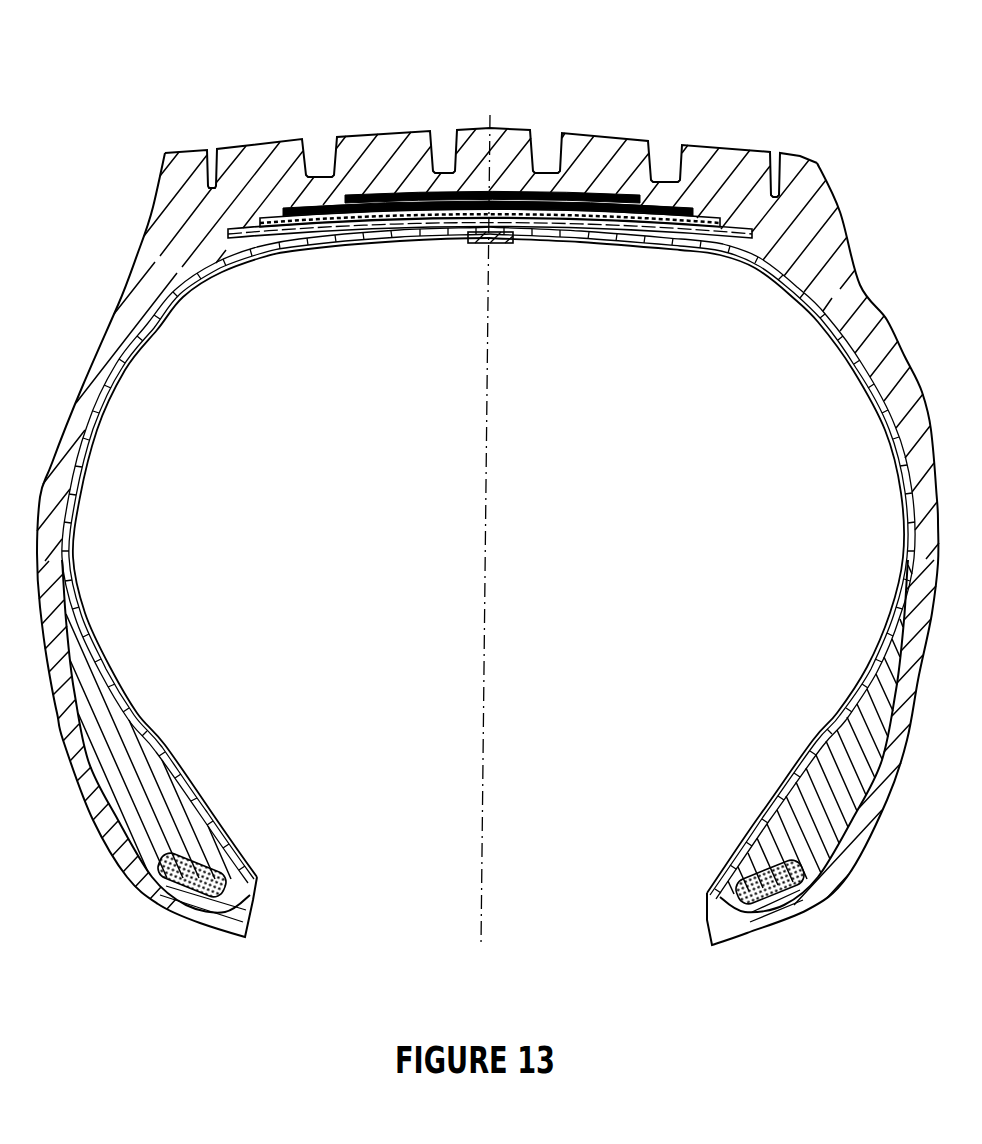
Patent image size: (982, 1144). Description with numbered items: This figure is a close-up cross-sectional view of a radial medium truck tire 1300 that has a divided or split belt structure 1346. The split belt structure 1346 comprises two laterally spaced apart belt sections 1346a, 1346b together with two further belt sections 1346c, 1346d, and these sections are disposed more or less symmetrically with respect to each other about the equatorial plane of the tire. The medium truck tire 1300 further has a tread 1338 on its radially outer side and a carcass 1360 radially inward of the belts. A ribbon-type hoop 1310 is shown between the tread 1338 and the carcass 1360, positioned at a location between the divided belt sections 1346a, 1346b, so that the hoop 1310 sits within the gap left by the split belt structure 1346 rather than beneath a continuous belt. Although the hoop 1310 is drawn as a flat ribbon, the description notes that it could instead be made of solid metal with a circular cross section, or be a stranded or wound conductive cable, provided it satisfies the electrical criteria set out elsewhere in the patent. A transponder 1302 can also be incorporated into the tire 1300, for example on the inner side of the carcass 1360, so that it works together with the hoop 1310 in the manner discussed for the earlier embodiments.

The radial medium truck tire 1300 is at (488, 491).
The transponder 1302 is at (497, 243).
The hoop 1310 is at (501, 191).
The tread 1338 is at (810, 183).
The split belt structure 1346 is at (270, 185).
The belt section 1346a is at (330, 224).
The belt section 1346b is at (392, 214).
The belt section 1346c is at (412, 203).
The belt section 1346d is at (438, 191).
The carcass 1360 is at (700, 280).